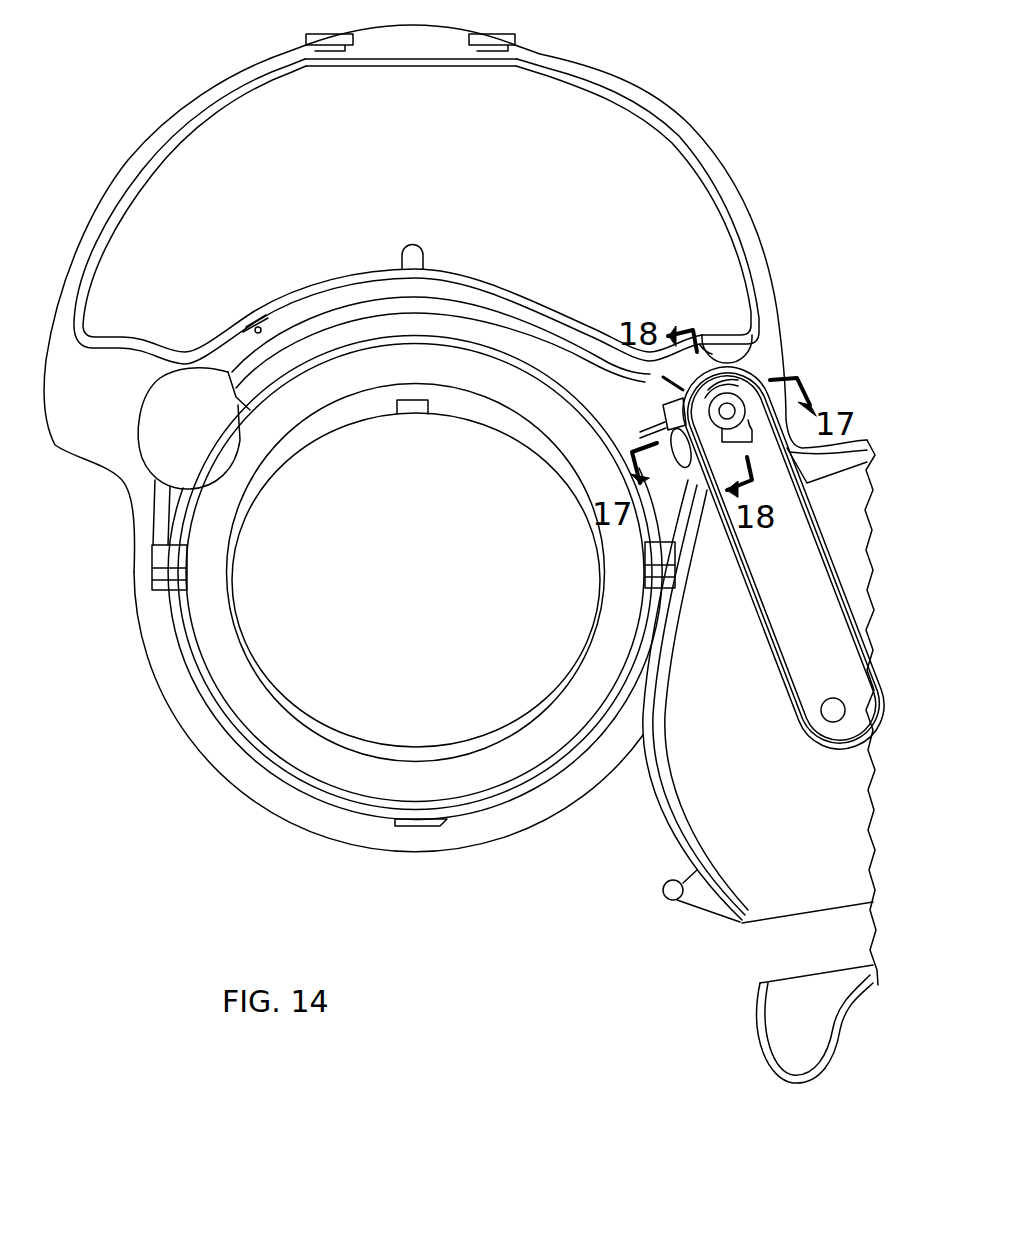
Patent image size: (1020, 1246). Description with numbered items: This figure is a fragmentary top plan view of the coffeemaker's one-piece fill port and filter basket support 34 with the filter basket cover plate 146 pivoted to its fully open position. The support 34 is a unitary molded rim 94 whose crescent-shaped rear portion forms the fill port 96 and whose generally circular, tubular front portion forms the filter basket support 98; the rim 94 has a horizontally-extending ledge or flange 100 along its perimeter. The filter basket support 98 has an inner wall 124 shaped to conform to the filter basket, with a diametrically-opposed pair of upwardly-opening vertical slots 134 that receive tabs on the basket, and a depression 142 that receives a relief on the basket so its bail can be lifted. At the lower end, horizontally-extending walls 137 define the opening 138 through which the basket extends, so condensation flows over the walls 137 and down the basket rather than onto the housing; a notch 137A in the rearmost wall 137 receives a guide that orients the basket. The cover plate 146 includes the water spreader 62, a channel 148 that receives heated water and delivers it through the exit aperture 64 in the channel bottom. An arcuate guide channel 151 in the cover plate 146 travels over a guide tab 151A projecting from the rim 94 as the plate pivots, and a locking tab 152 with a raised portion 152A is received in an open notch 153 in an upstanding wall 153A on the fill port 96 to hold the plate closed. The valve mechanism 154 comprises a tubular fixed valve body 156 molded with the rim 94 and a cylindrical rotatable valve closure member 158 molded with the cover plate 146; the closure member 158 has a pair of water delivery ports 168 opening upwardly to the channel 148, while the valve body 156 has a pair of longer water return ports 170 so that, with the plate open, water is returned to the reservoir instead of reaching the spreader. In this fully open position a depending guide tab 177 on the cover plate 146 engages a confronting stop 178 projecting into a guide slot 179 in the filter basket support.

The fill port and filter basket support 34 is at (710, 174).
The water spreader 62 is at (833, 612).
The exit aperture 64 is at (822, 713).
The rim 94 is at (655, 125).
The fill port 96 is at (590, 118).
The filter basket support 98 is at (160, 690).
The shell 100 is at (178, 125).
The inner wall 124 is at (243, 462).
The vertical slots 134 is at (152, 568).
The horizontally-extending walls 137 is at (353, 415).
The notch 137A is at (413, 416).
The opening 138 is at (414, 585).
The depression 142 is at (190, 405).
The cover plate 146 is at (713, 812).
The channel 148 is at (790, 620).
The arcuate guide channel 151 is at (818, 925).
The guide tab 151A is at (400, 826).
The locking tab 152 is at (700, 900).
The raised portion 152A is at (662, 890).
The open notch 153 is at (253, 325).
The upstanding wall 153A is at (330, 277).
The valve mechanism 154 is at (795, 358).
The valve body 156 is at (760, 345).
The valve closure member 158 is at (755, 400).
The water delivery ports 168 is at (715, 336).
The water return ports 170 is at (765, 358).
The guide tab 177 is at (660, 410).
The stop 178 is at (700, 348).
The guide slot 179 is at (667, 442).